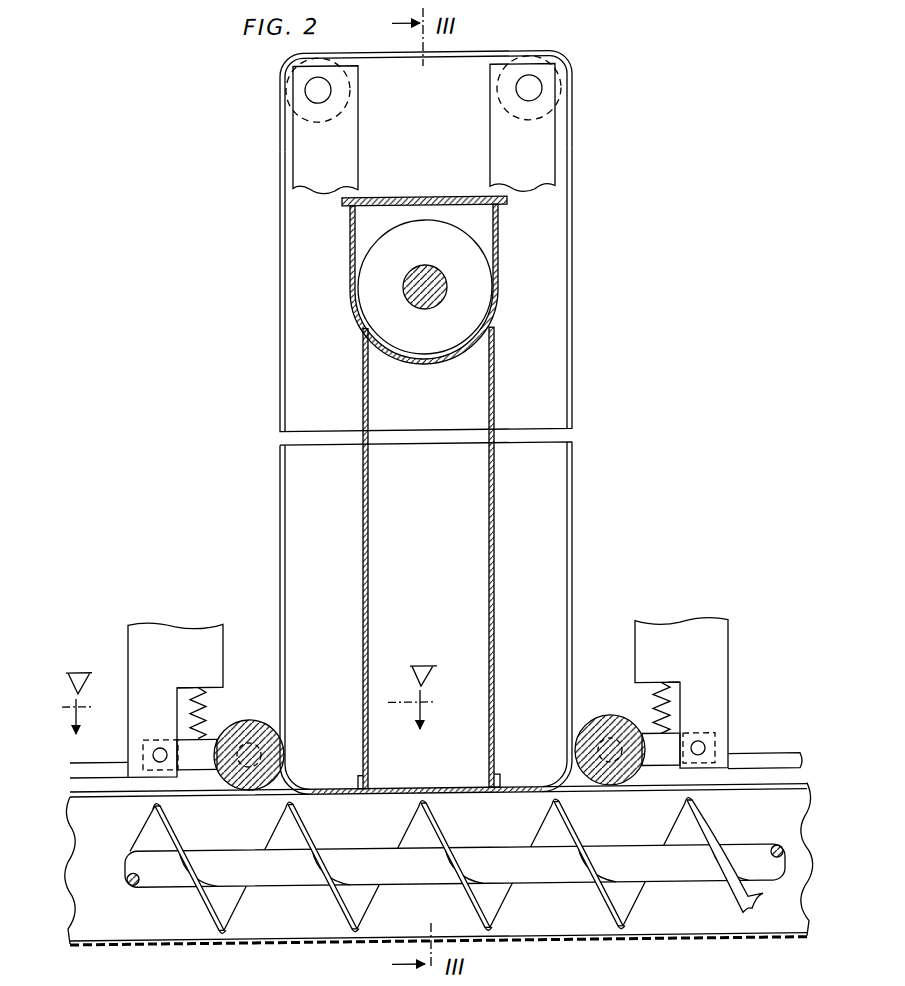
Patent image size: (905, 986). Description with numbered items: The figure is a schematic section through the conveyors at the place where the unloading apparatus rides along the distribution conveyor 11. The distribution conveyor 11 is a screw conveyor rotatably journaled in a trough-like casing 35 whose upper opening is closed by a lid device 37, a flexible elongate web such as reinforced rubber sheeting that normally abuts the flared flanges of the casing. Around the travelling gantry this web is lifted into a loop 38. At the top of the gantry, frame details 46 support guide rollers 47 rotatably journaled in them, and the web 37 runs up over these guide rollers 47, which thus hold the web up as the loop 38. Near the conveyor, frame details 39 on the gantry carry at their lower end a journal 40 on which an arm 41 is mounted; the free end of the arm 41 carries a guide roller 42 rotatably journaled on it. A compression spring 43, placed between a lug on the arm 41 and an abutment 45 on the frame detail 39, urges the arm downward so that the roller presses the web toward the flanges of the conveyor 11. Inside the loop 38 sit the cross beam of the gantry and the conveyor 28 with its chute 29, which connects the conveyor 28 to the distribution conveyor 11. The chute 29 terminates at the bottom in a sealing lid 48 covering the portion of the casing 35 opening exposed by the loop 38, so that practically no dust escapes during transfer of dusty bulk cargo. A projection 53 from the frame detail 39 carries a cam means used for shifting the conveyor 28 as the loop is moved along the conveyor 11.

The distribution conveyor 11 is at (231, 903).
The conveyor 28 is at (422, 236).
The chute 29 is at (477, 737).
The trough-like casing 35 is at (162, 912).
The lid device 37 is at (280, 340).
The loop 38 is at (280, 140).
The frame details 39 is at (140, 637).
The journal 40 is at (155, 754).
The arm 41 is at (205, 765).
The guide roller 42 is at (250, 778).
The compression spring 43 is at (192, 704).
The abutment 45 is at (214, 698).
The frame details 46 is at (343, 130).
The guide rollers 47 is at (333, 89).
The sealing lid 48 is at (327, 788).
The projection 53 is at (108, 774).